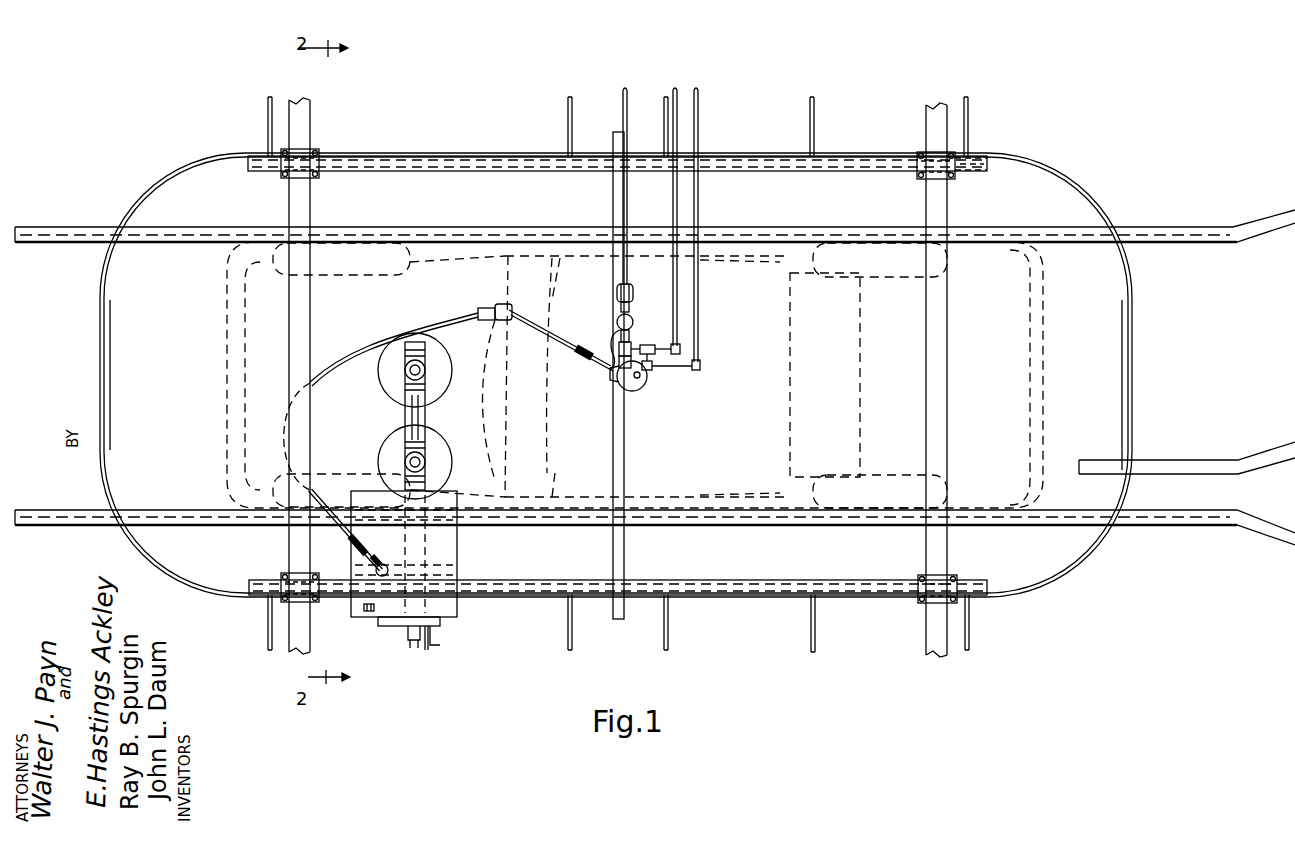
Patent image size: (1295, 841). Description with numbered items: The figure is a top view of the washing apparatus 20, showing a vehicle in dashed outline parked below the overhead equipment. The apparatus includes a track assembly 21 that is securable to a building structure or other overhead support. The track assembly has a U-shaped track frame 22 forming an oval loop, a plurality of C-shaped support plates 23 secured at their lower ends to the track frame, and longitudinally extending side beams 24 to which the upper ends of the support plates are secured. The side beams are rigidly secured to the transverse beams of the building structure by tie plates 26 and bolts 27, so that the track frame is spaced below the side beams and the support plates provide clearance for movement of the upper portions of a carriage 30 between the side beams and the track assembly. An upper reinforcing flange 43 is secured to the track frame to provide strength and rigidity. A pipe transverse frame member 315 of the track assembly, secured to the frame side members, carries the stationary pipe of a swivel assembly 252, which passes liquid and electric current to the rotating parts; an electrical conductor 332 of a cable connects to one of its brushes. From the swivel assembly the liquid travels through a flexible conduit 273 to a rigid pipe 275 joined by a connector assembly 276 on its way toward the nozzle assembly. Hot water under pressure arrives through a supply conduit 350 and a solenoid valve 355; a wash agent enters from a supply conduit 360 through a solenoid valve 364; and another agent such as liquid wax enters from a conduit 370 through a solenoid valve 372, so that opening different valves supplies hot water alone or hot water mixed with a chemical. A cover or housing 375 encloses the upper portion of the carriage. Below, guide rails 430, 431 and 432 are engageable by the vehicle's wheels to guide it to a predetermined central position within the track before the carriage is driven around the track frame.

The washing apparatus 20 is at (1004, 70).
The track assembly 21 is at (980, 160).
The track frame 22 is at (312, 197).
The C-shaped support plates 23 is at (842, 96).
The side beams 24 is at (846, 157).
The tie plates 26 is at (300, 172).
The bolts 27 is at (317, 152).
The carriage 30 is at (394, 629).
The upper reinforcing flange 43 is at (1122, 379).
The swivel assembly 252 is at (642, 386).
The flexible conduit 273 is at (441, 328).
The rigid pipe 275 is at (543, 326).
The connector assembly 276 is at (490, 304).
The pipe transverse frame member 315 is at (625, 442).
The electrical conductor 332 is at (584, 350).
The supply conduit 350 is at (622, 90).
The solenoid valve 355 is at (634, 300).
The supply conduit 360 is at (674, 88).
The solenoid valve 364 is at (652, 344).
The conduit 370 is at (697, 92).
The solenoid valve 372 is at (652, 372).
The cover or housing 375 is at (458, 546).
The guide rail 430 is at (138, 238).
The guide rail 431 is at (1168, 460).
The guide rail 432 is at (1168, 512).